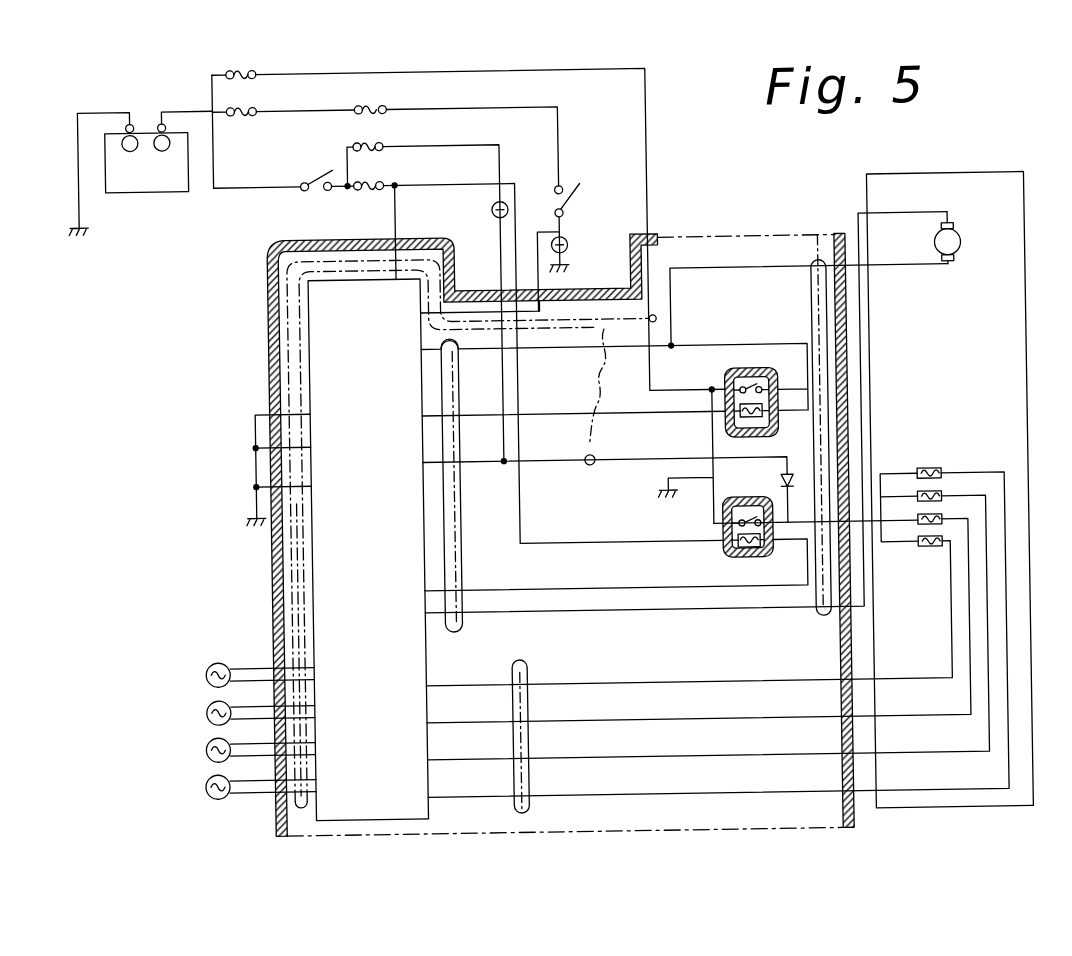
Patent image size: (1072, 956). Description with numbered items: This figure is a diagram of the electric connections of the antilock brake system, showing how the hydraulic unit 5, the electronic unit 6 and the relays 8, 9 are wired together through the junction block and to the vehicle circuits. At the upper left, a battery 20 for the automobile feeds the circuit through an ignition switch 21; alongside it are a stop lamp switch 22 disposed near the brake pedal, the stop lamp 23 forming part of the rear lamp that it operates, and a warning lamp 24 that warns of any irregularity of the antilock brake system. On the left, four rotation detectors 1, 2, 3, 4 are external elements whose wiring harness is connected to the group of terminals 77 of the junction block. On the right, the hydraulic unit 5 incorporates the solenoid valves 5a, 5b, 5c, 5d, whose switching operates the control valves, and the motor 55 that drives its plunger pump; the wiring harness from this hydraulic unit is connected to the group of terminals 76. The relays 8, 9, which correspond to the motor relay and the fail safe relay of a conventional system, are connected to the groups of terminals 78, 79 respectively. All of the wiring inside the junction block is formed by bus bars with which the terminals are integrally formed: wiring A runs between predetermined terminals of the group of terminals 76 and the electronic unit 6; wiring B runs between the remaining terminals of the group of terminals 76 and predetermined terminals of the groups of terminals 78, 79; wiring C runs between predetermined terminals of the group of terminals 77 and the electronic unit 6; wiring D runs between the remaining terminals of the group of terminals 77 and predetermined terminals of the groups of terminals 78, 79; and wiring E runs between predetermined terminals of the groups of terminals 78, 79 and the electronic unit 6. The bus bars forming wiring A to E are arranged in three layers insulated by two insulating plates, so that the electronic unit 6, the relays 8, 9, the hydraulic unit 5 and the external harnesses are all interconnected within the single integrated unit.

The rotation detector 1 is at (204, 668).
The rotation detector 2 is at (204, 706).
The rotation detector 3 is at (203, 744).
The rotation detector 4 is at (202, 783).
The hydraulic unit 5 is at (1031, 644).
The solenoid valve 5a is at (926, 474).
The solenoid valve 5b is at (944, 500).
The solenoid valve 5c is at (920, 532).
The solenoid valve 5d is at (929, 554).
The electronic unit 6 is at (424, 812).
The relay 8 is at (763, 371).
The relay 9 is at (762, 562).
The battery 20 is at (152, 186).
The ignition switch 21 is at (318, 170).
The stop lamp switch 22 is at (588, 188).
The stop lamp 23 is at (574, 244).
The warning lamp 24 is at (497, 209).
The motor 55 is at (966, 246).
The group of terminals 76 is at (851, 826).
The group of terminals 77 is at (268, 822).
The group of terminals 78 is at (738, 371).
The group of terminals 79 is at (724, 556).
The wiring A is at (525, 800).
The wiring B is at (822, 238).
The wiring C is at (268, 578).
The wiring D is at (607, 397).
The wiring E is at (455, 632).